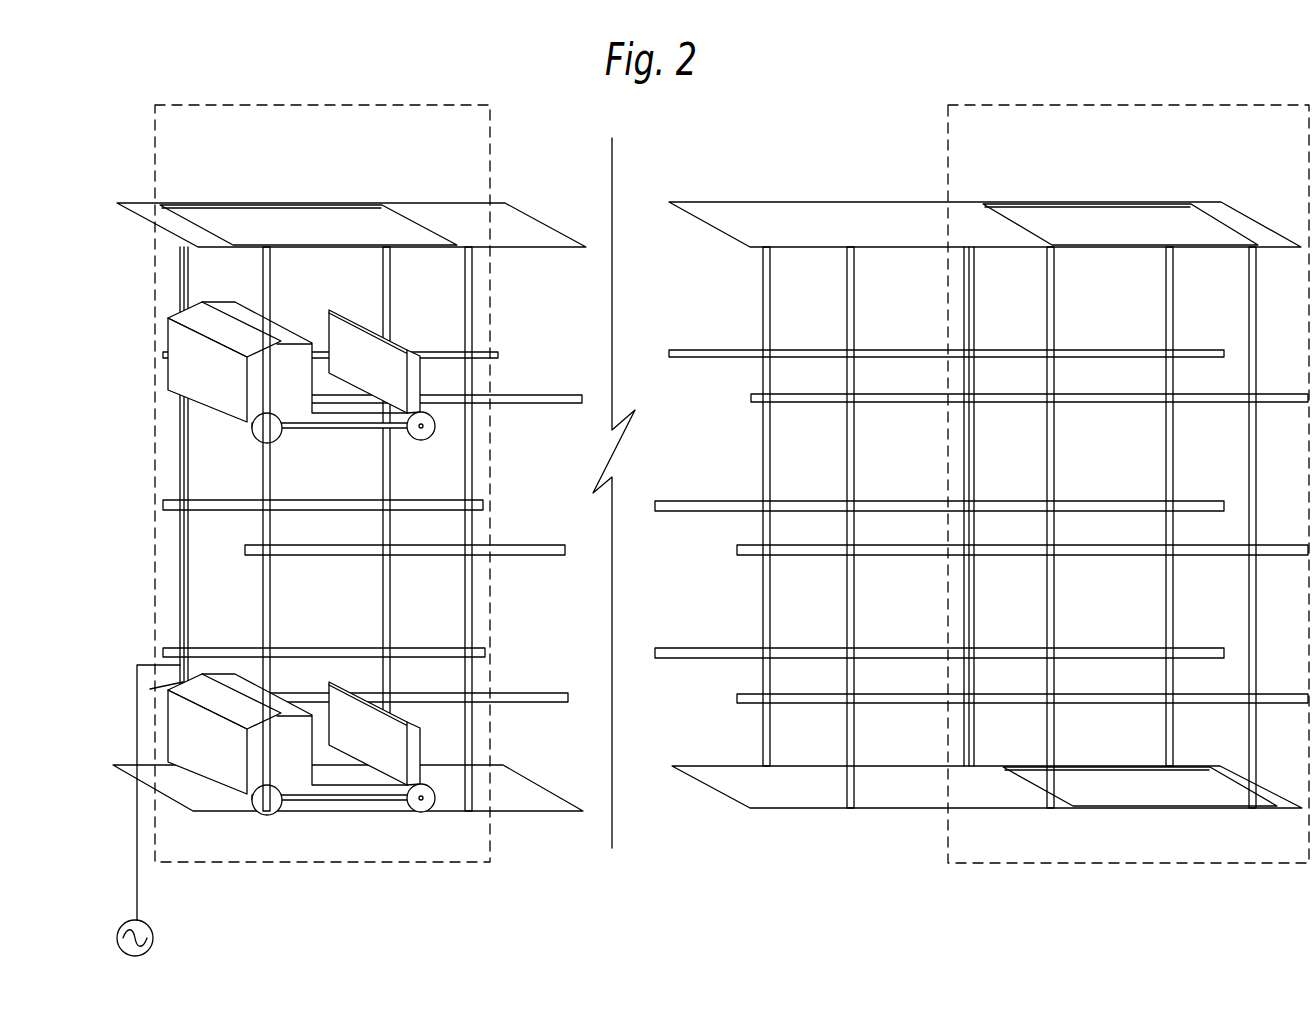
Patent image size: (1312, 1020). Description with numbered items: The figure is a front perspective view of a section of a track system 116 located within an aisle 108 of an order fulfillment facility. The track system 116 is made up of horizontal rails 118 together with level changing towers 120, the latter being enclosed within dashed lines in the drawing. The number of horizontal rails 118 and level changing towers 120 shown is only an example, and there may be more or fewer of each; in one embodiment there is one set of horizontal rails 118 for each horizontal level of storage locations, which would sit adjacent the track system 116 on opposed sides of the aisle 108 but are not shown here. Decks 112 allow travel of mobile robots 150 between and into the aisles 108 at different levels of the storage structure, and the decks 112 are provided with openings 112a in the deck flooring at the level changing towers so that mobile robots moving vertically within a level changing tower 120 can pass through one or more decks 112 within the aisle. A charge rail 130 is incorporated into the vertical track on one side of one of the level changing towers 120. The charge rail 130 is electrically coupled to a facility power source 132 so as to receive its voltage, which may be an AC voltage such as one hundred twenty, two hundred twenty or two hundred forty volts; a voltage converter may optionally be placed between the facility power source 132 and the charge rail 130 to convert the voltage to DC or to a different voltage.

The aisle 108 is at (826, 617).
The deck 112 is at (865, 233).
The opening 112a is at (1142, 233).
The track system 116 is at (705, 295).
The horizontal rail 118 is at (733, 500).
The level changing tower 120 is at (333, 103).
The charge rail 130 is at (184, 433).
The facility power source 132 is at (150, 927).
The mobile robot 150 is at (180, 358).